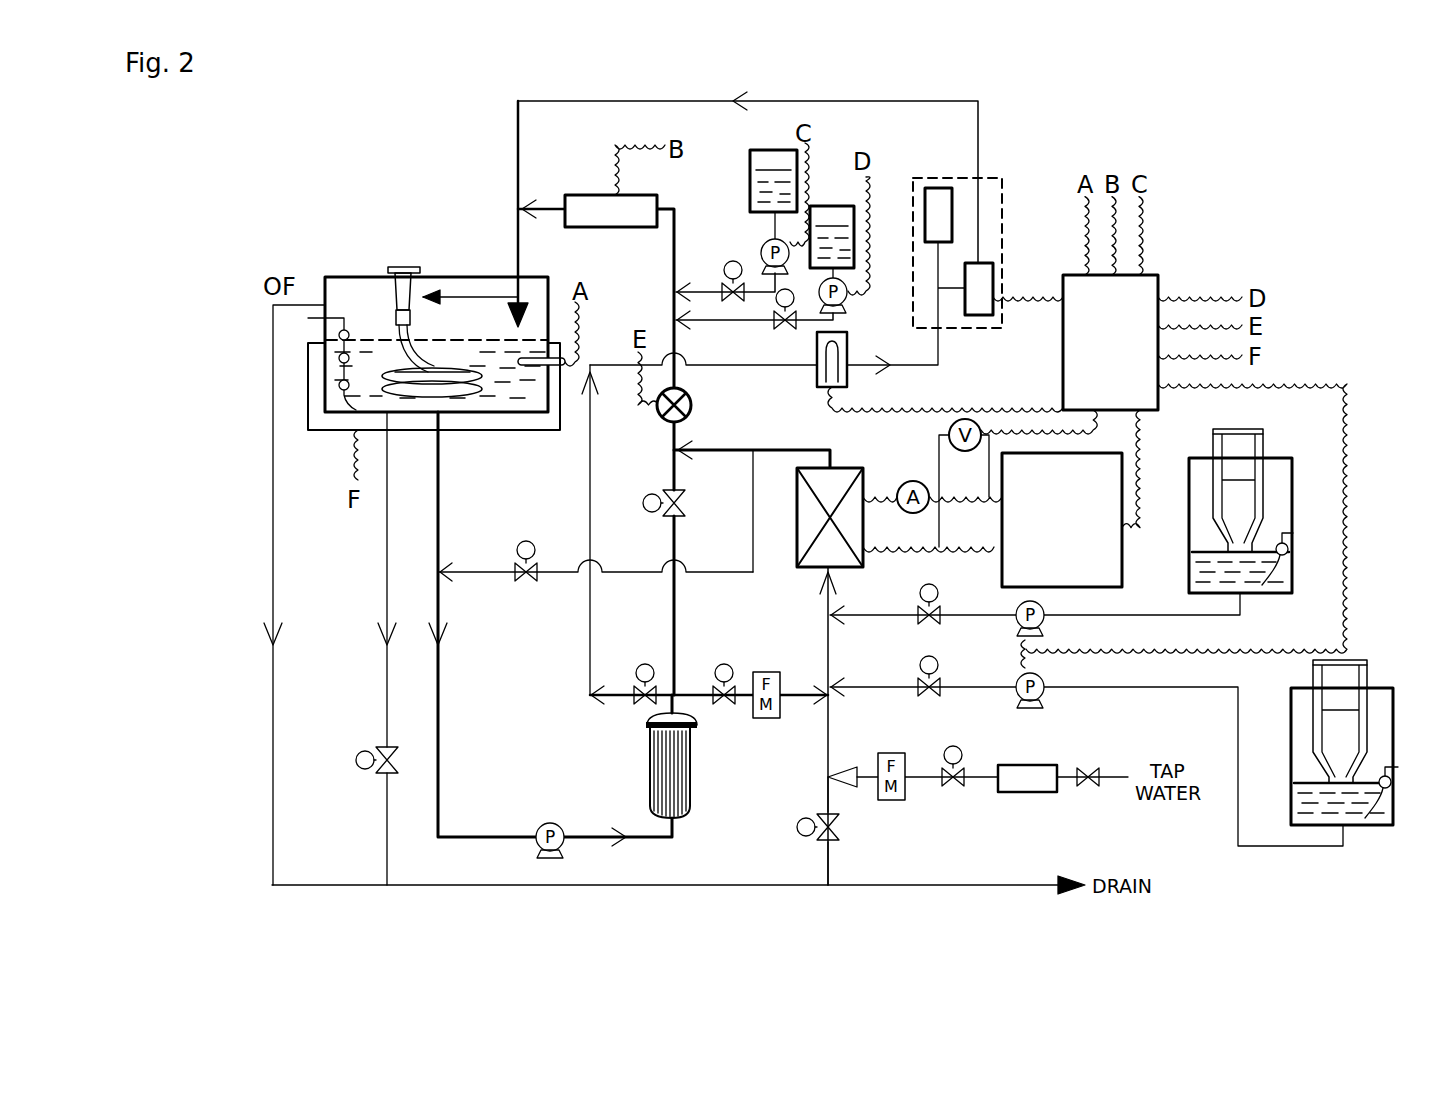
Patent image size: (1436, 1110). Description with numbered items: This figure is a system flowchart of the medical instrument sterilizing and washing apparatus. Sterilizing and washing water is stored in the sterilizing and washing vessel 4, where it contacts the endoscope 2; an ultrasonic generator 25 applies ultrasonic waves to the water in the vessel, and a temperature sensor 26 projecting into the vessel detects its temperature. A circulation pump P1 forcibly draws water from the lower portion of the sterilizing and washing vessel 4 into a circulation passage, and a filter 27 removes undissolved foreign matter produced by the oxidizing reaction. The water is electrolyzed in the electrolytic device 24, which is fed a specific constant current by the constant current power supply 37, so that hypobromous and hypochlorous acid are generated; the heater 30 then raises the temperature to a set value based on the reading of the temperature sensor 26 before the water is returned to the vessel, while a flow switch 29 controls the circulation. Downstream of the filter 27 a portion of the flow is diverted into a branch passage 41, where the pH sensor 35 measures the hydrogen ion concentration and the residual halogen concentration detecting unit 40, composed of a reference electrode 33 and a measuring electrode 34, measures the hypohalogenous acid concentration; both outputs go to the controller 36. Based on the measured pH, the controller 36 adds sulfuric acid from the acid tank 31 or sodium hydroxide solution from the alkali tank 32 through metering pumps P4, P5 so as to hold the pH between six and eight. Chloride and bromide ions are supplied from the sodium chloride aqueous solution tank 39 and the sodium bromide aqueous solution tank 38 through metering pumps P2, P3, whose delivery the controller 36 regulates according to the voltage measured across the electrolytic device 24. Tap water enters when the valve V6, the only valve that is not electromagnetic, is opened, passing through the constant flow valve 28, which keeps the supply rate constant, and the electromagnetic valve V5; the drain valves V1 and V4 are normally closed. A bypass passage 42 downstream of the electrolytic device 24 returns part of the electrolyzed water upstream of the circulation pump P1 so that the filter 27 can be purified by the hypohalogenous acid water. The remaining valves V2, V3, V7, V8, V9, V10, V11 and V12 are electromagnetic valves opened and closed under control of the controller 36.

The endoscope 2 is at (401, 266).
The sterilizing and washing vessel 4 is at (345, 277).
The electrolytic device 24 is at (824, 555).
The ultrasonic generator 25 is at (318, 432).
The temperature sensor 26 is at (557, 355).
The filter 27 is at (692, 758).
The constant flow valve 28 is at (1027, 793).
The flow switch 29 is at (692, 404).
The heater 30 is at (622, 228).
The acid tank 31 is at (773, 149).
The alkali tank 32 is at (832, 205).
The reference electrode 33 is at (935, 197).
The measuring electrode 34 is at (987, 286).
The pH sensor 35 is at (847, 377).
The controller 36 is at (1158, 275).
The constant current power supply 37 is at (1112, 557).
The sodium bromide aqueous solution tank 38 is at (1275, 458).
The sodium chloride aqueous solution tank 39 is at (1383, 688).
The residual halogen concentration detecting unit 40 is at (990, 178).
The branch passage 41 is at (589, 666).
The return pipe 42 is at (556, 578).
The magnetic valve V1 is at (360, 743).
The valve V2 is at (654, 493).
The valve V3 is at (722, 672).
The magnetic valve V4 is at (836, 829).
The electromagnetic valve V5 is at (949, 784).
The valve V6 is at (1084, 795).
The valve V7 is at (912, 676).
The valve V8 is at (911, 604).
The valve V9 is at (766, 322).
The valve V10 is at (716, 277).
The valve V11 is at (502, 553).
The valve V12 is at (629, 669).
The circulation pump P1 is at (549, 825).
The metering pump P2 is at (1011, 700).
The metering pump P3 is at (1011, 625).
The metering pump P4 is at (854, 300).
The metering pump P5 is at (762, 246).